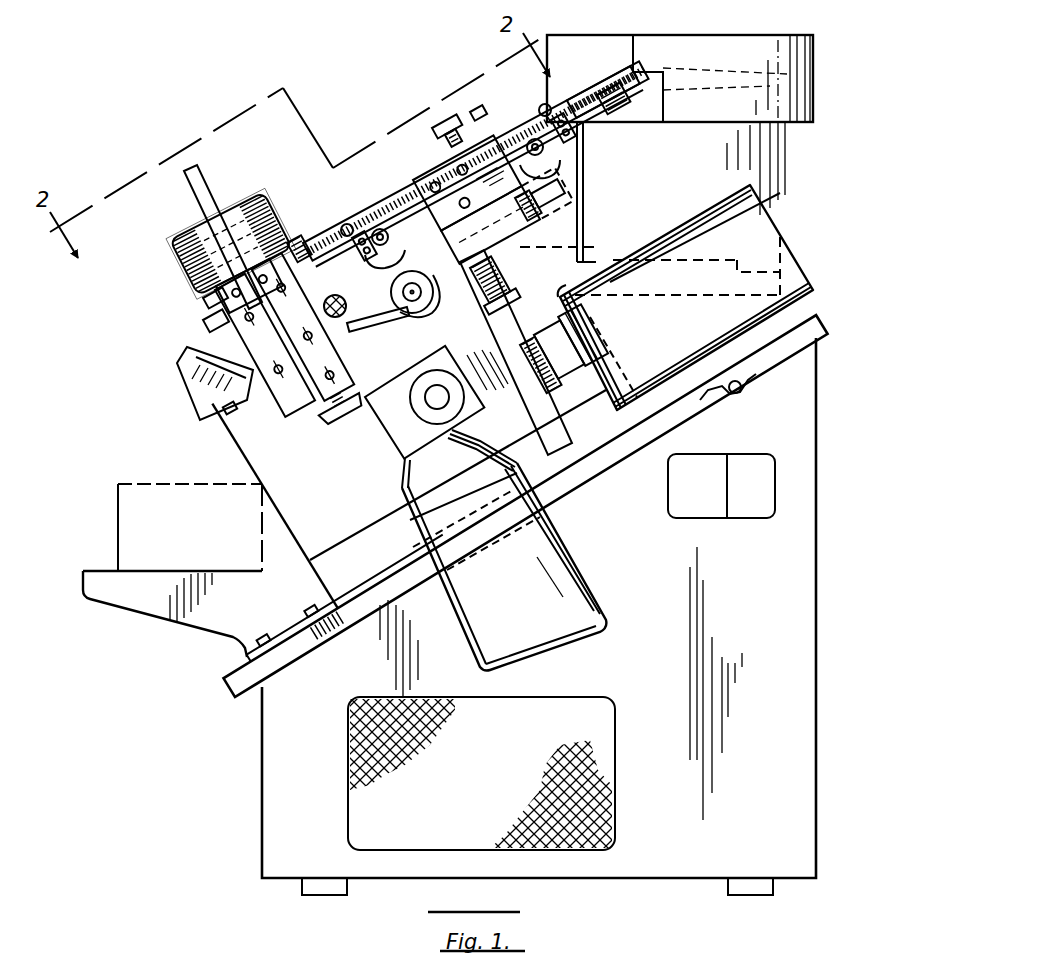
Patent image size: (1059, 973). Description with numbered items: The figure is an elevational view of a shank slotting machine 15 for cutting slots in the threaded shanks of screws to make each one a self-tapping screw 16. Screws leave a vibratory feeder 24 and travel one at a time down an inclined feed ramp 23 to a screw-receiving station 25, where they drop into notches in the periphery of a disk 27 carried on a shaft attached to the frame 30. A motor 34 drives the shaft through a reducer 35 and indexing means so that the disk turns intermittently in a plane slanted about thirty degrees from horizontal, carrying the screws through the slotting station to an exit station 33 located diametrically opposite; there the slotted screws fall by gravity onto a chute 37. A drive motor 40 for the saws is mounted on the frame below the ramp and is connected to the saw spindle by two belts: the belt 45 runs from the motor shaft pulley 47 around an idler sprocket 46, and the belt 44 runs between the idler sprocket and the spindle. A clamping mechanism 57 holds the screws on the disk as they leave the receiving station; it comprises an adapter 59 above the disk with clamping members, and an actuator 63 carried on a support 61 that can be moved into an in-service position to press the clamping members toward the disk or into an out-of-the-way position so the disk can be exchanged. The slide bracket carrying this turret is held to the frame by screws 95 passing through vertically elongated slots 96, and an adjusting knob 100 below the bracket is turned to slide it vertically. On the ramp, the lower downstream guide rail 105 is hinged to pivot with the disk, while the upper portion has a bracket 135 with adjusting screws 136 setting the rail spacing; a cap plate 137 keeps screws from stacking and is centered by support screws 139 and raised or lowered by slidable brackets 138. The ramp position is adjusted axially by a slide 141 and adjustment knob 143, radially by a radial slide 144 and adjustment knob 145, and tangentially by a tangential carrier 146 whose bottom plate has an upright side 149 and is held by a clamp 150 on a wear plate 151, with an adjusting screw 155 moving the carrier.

The machine 15 is at (152, 276).
The self-tapping screw 16 is at (595, 72).
The inclined feed ramp 23 is at (610, 55).
The vibratory feeder 24 is at (820, 72).
The screw-receiving station 25 is at (305, 252).
The disk 27 is at (222, 363).
The frame 30 is at (835, 342).
The exit station 33 is at (203, 322).
The motor 34 is at (590, 578).
The reducer 35 is at (390, 452).
The chute 37 is at (183, 408).
The drive motor 40 is at (765, 233).
The belt 44 is at (572, 306).
The belt 45 is at (580, 400).
The idler sprocket 46 is at (530, 402).
The motor shaft pulley 47 is at (600, 345).
The clamping mechanism 57 is at (282, 192).
The adapter 59 is at (203, 303).
The support 61 is at (185, 185).
The actuator 63 is at (174, 228).
The screws 95 is at (290, 405).
The slots 96 is at (232, 418).
The adjusting knob 100 is at (320, 428).
The downstream guide rail 105 is at (625, 108).
The bracket 135 is at (588, 156).
The adjusting screws 136 is at (388, 228).
The cap plate 137 is at (477, 112).
The slidable brackets 138 is at (392, 212).
The support screws 139 is at (347, 224).
The slide 141 is at (570, 180).
The adjustment knob 143 is at (417, 140).
The radial slide 144 is at (575, 243).
The adjustment knob 145 is at (560, 210).
The tangential carrier 146 is at (500, 296).
The upright side 149 is at (485, 280).
The clamp 150 is at (343, 342).
The wear plate 151 is at (382, 333).
The adjusting screw 155 is at (452, 307).